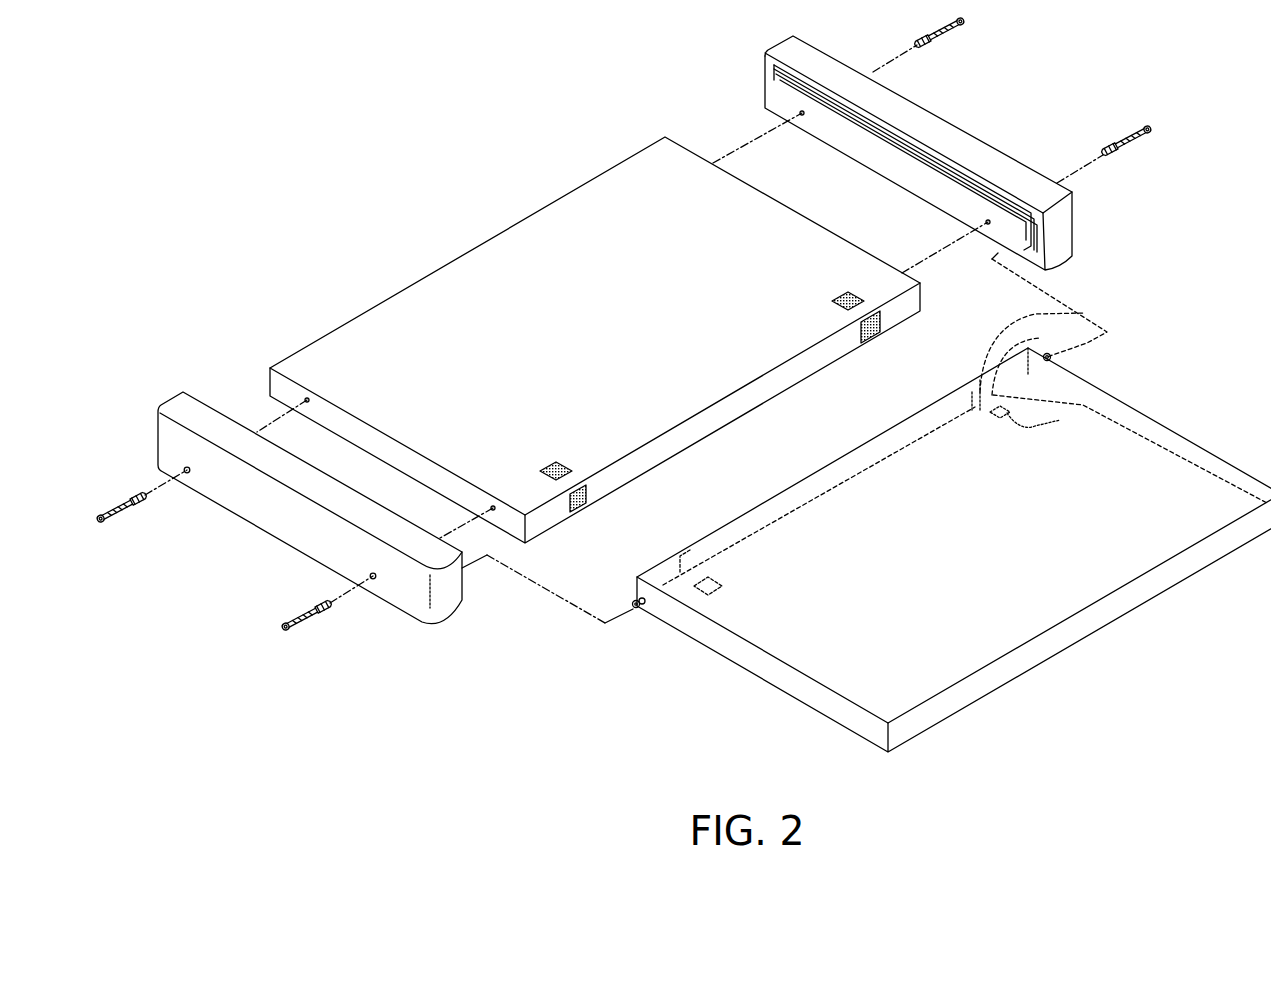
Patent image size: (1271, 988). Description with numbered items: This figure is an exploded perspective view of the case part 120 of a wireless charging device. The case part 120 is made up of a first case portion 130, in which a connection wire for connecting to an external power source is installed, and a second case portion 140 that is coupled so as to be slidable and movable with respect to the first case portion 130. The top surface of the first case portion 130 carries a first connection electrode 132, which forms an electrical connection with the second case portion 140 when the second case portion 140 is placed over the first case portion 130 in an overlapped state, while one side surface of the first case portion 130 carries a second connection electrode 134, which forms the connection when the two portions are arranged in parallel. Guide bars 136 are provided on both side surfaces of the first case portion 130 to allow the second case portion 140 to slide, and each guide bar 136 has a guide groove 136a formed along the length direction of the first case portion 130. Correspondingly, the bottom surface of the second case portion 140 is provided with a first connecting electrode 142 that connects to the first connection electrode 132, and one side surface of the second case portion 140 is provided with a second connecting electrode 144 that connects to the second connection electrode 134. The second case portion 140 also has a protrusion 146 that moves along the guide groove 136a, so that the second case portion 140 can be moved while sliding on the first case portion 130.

The case part 120 is at (595, 722).
The first case portion 130 is at (518, 452).
The first connection electrode 132 is at (845, 291).
The second connection electrode 134 is at (872, 343).
The guide bar 136 is at (624, 324).
The guide groove 136a is at (955, 185).
The second case portion 140 is at (785, 622).
The first connecting electrode 142 is at (1123, 395).
The second connecting electrode 144 is at (1090, 313).
The protrusion 146 is at (1052, 356).